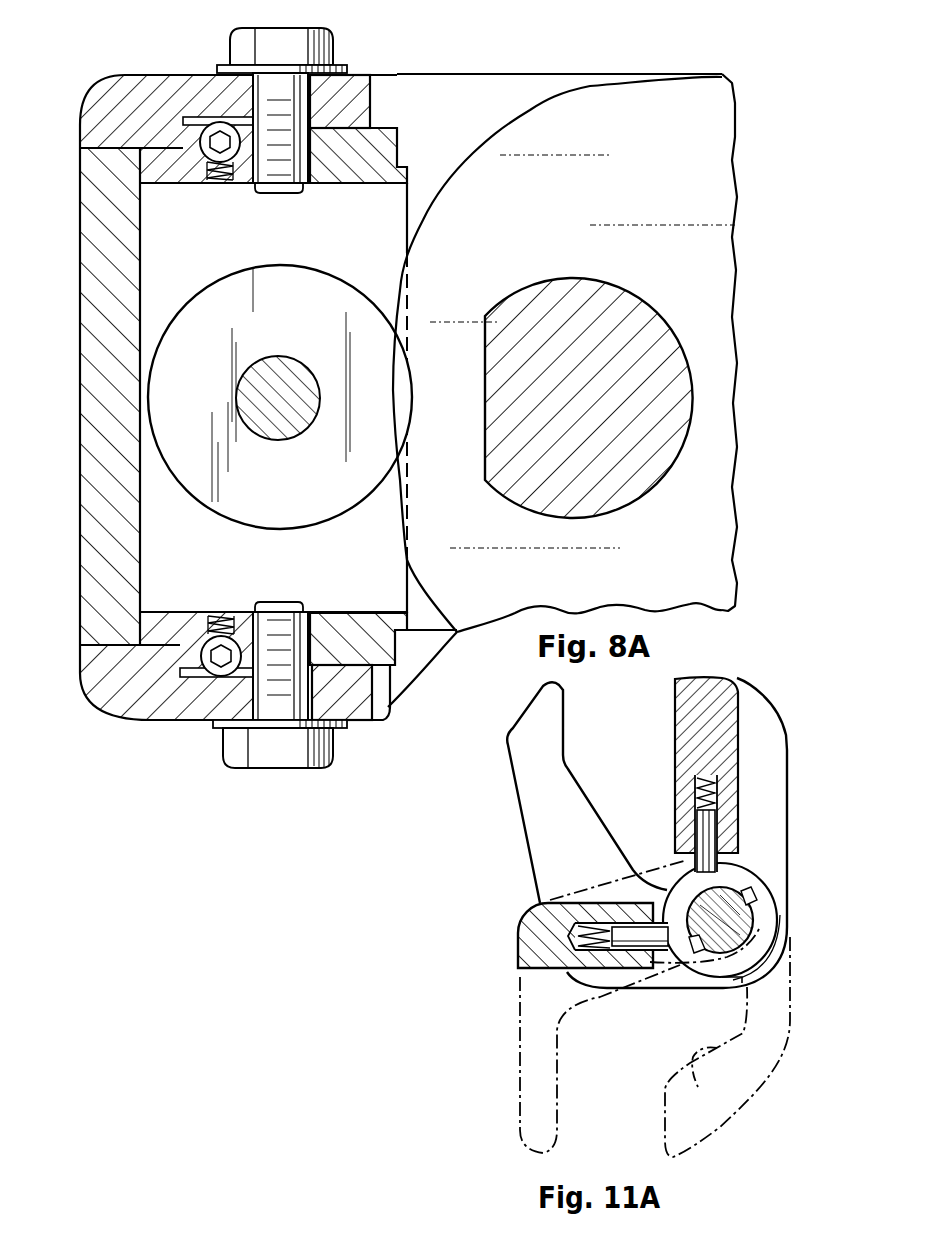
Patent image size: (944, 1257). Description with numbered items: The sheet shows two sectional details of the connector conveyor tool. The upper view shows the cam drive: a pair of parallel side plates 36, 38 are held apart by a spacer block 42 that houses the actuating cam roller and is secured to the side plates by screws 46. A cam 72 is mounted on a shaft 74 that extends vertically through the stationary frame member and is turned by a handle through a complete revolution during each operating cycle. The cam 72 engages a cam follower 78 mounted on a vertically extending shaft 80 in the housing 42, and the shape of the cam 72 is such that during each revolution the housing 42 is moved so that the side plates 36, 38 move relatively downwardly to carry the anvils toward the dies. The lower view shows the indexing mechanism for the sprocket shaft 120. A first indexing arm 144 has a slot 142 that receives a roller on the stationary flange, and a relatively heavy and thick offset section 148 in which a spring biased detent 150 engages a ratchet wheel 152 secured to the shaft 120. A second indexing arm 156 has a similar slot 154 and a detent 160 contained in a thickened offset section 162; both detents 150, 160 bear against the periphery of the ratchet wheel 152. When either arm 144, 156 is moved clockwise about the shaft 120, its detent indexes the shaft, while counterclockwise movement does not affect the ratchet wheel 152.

In FIG. 8A, the side plate 36 is at (148, 76).
In FIG. 8A, the side plate 38 is at (170, 697).
In FIG. 8A, the spacer block 42 is at (80, 316).
In FIG. 8A, the screws 46 is at (278, 770).
In FIG. 8A, the cam 72 is at (530, 110).
In FIG. 8A, the shaft 74 is at (553, 279).
In FIG. 8A, the cam follower 78 is at (210, 507).
In FIG. 8A, the shaft 80 is at (278, 356).
In FIG. 11A, the shaft 120 is at (755, 923).
In FIG. 11A, the slot 142 is at (695, 1077).
In FIG. 11A, the first indexing arm 144 is at (513, 1008).
In FIG. 11A, the offset section 148 is at (520, 930).
In FIG. 11A, the spring biased detent 150 is at (630, 930).
In FIG. 11A, the ratchet wheel 152 is at (743, 877).
In FIG. 11A, the slot 154 is at (593, 787).
In FIG. 11A, the indexing arm 156 is at (765, 733).
In FIG. 11A, the detent 160 is at (697, 823).
In FIG. 11A, the thickened offset section 162 is at (723, 685).